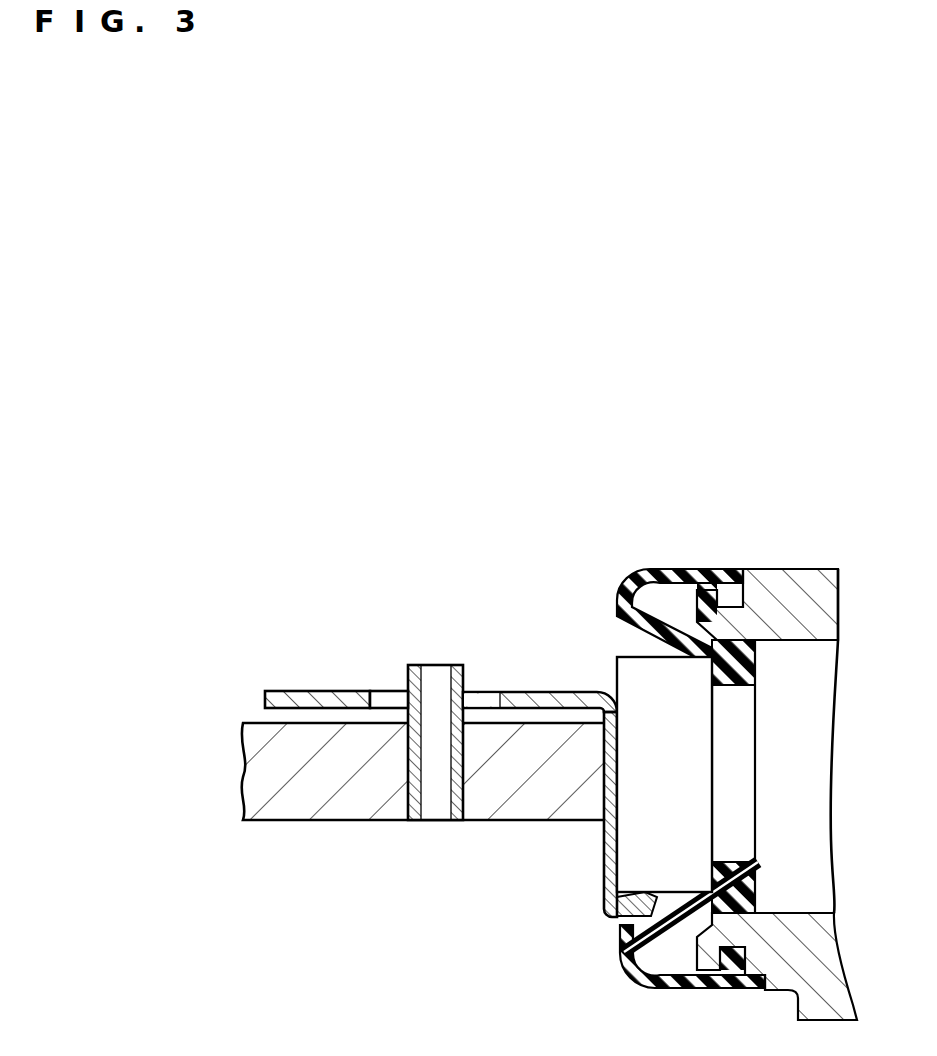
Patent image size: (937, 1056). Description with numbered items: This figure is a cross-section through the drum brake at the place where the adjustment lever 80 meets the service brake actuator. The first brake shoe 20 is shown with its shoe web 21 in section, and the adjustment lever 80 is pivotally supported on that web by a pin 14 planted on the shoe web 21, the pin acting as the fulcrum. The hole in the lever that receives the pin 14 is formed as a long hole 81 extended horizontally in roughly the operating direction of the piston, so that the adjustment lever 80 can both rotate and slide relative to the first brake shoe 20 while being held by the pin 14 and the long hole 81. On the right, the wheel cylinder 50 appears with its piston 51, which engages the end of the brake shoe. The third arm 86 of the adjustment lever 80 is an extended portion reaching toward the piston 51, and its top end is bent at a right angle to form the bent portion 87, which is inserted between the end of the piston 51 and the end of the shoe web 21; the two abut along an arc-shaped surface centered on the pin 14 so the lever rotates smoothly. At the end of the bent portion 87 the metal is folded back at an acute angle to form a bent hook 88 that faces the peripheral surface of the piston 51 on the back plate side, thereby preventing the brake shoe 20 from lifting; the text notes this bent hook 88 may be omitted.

The pin 14 is at (463, 665).
The first brake shoe 20 is at (243, 778).
The shoe web 21 is at (325, 805).
The wheel cylinder 50 is at (800, 568).
The piston 51 is at (642, 678).
The adjustment lever 80 is at (291, 692).
The long hole 81 is at (382, 691).
The third arm 86 is at (558, 692).
The bent portion 87 is at (604, 843).
The bent hook 88 is at (618, 934).